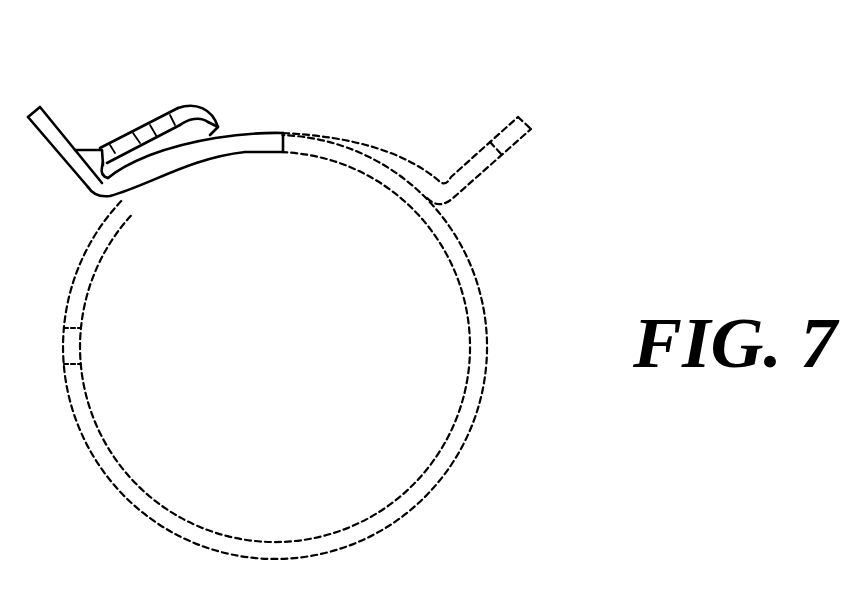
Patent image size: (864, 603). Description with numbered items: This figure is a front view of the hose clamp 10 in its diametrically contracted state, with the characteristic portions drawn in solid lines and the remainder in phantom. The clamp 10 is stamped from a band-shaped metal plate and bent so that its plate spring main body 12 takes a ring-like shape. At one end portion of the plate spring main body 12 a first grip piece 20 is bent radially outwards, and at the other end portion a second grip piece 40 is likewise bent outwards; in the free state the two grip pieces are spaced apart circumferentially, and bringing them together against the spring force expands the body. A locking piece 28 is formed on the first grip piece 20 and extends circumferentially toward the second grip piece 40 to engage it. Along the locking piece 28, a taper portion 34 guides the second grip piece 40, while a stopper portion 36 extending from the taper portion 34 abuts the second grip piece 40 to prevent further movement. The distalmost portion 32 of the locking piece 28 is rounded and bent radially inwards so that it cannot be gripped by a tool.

The clamp 10 is at (286, 117).
The plate spring main body 12 is at (260, 150).
The first grip piece 20 is at (63, 110).
The locking piece 28 is at (139, 117).
The distalmost portion 32 is at (218, 127).
The taper portion 34 is at (100, 158).
The stopper portion 36 is at (101, 178).
The second grip piece 40 is at (507, 165).